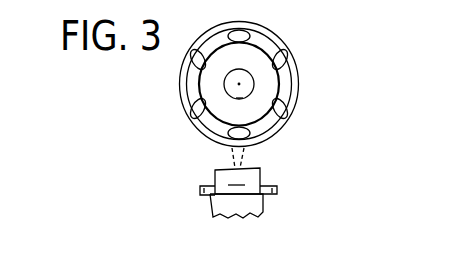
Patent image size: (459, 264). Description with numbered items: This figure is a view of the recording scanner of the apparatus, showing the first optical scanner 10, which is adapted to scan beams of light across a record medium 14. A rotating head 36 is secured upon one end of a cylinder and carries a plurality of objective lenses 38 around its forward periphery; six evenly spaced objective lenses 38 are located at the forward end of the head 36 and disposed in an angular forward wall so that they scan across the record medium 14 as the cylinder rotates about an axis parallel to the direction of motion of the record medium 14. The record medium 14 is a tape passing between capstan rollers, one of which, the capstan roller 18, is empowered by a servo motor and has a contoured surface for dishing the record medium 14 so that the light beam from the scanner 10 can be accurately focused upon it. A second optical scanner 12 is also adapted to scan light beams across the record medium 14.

The first optical scanner 10 is at (247, 84).
The head 36 is at (190, 80).
The objective lenses 38 is at (283, 101).
The record medium 14 is at (223, 166).
The capstan roller 18 is at (226, 178).
The second optical scanner 12 is at (266, 207).